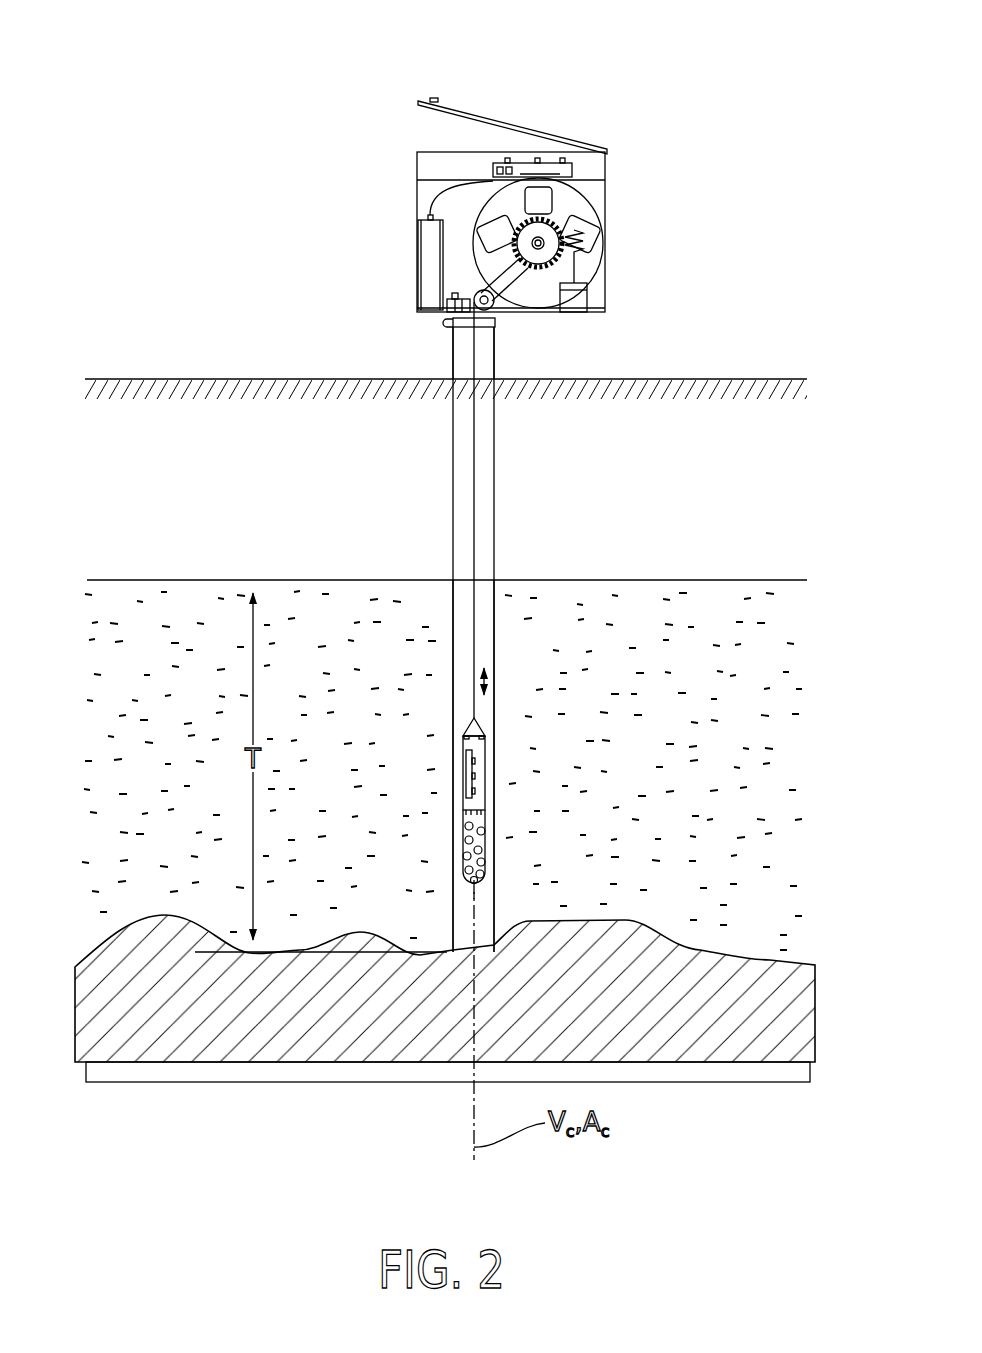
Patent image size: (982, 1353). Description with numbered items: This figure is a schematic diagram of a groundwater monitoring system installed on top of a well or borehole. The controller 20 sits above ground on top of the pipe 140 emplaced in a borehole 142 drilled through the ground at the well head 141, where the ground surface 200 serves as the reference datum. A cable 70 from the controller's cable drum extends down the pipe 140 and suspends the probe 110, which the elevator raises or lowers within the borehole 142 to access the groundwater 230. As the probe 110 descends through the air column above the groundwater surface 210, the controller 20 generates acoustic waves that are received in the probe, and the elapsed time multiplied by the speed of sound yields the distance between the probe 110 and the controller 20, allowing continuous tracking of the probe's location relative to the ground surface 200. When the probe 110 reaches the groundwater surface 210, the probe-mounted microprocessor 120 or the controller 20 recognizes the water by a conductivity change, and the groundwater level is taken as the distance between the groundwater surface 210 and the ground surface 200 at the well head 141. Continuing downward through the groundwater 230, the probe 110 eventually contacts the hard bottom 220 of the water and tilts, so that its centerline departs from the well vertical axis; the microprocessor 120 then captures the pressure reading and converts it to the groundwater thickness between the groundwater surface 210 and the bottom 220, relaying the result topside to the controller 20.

The controller 20 is at (597, 118).
The cable 70 is at (474, 540).
The probe 110 is at (451, 776).
The microprocessor 120 is at (472, 773).
The pipe 140 is at (453, 503).
The well head 141 is at (418, 358).
The borehole 142 is at (440, 563).
The ground surface 200 is at (720, 379).
The groundwater surface 210 is at (688, 580).
The bottom of the water 220 is at (675, 945).
The groundwater 230 is at (163, 705).